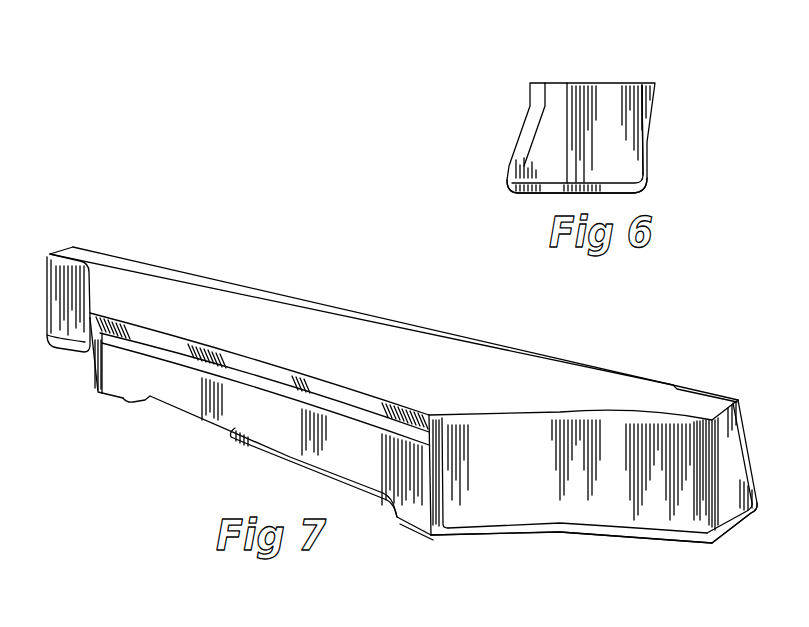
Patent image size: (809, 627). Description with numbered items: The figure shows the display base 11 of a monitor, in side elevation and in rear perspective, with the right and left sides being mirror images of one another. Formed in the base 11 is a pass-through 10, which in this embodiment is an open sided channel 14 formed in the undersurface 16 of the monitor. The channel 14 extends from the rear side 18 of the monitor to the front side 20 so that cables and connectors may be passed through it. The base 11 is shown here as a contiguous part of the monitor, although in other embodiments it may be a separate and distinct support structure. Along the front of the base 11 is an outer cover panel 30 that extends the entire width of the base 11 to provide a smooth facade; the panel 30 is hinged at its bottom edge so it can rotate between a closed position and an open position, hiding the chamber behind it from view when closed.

In FIG. 7, the pass-through 10 is at (145, 398).
In FIG. 6, the base 11 is at (591, 125).
In FIG. 7, the base 11 is at (410, 390).
In FIG. 7, the channel 14 is at (276, 455).
In FIG. 6, the undersurface 16 is at (543, 194).
In FIG. 7, the undersurface 16 is at (506, 538).
In FIG. 6, the rear side 18 is at (653, 86).
In FIG. 7, the rear side 18 is at (126, 372).
In FIG. 6, the front side 20 is at (527, 113).
In FIG. 7, the front side 20 is at (90, 248).
In FIG. 7, the outer cover panel 30 is at (472, 338).